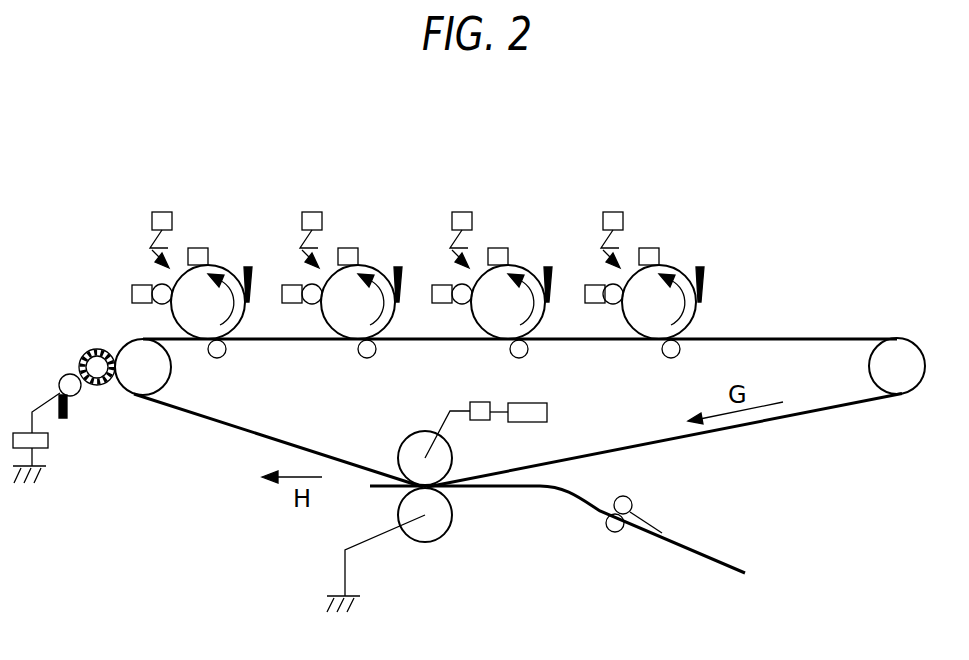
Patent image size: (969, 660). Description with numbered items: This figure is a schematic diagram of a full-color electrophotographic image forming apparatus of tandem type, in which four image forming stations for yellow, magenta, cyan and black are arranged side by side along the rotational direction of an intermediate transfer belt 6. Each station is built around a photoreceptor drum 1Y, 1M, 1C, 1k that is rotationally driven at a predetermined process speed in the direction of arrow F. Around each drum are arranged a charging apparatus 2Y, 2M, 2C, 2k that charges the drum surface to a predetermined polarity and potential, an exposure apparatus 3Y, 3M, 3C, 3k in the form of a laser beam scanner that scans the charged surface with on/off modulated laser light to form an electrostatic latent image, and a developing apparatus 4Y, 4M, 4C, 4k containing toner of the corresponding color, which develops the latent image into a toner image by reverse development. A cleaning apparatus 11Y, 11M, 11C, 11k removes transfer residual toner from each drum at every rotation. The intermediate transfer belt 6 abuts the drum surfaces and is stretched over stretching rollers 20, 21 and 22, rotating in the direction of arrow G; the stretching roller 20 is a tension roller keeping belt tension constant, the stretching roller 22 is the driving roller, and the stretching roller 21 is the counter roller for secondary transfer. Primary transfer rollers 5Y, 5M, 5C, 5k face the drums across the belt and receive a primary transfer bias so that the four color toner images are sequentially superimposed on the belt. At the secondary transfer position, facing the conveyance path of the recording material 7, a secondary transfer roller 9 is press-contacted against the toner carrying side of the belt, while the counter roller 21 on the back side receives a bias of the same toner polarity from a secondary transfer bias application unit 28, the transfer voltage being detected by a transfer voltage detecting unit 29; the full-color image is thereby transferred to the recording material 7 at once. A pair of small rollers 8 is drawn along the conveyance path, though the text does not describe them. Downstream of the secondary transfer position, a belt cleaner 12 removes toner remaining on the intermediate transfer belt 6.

The photoreceptor drum 1Y is at (176, 278).
The photoreceptor drum 1M is at (330, 278).
The photoreceptor drum 1C is at (480, 278).
The photoreceptor drum 1k is at (696, 312).
The charging apparatus 2Y is at (198, 248).
The charging apparatus 2M is at (348, 248).
The charging apparatus 2C is at (498, 248).
The charging apparatus 2k is at (649, 248).
The exposure apparatus 3Y is at (162, 212).
The exposure apparatus 3M is at (312, 212).
The exposure apparatus 3C is at (462, 212).
The exposure apparatus 3k is at (613, 212).
The developing apparatus 4Y is at (132, 293).
The developing apparatus 4M is at (292, 303).
The developing apparatus 4C is at (442, 303).
The developing apparatus 4k is at (595, 303).
The primary transfer roller 5Y is at (219, 358).
The primary transfer roller 5M is at (369, 358).
The primary transfer roller 5C is at (521, 358).
The primary transfer roller 5k is at (673, 358).
The cleaning apparatus 11Y is at (248, 267).
The cleaning apparatus 11M is at (398, 267).
The cleaning apparatus 11C is at (548, 267).
The cleaning apparatus 11k is at (700, 267).
The intermediate transfer belt 6 is at (838, 403).
The recording material 7 is at (552, 490).
The registration roller pair 8 is at (615, 532).
The secondary transfer roller 9 is at (398, 512).
The cleaning apparatus (belt cleaner) 12 is at (76, 352).
The stretching roller (tension roller) 20 is at (912, 338).
The stretching roller (counter roller) 21 is at (398, 445).
The stretching roller (driving roller) 22 is at (117, 349).
The secondary transfer bias application unit 28 is at (528, 422).
The transfer voltage detecting unit 29 is at (481, 420).